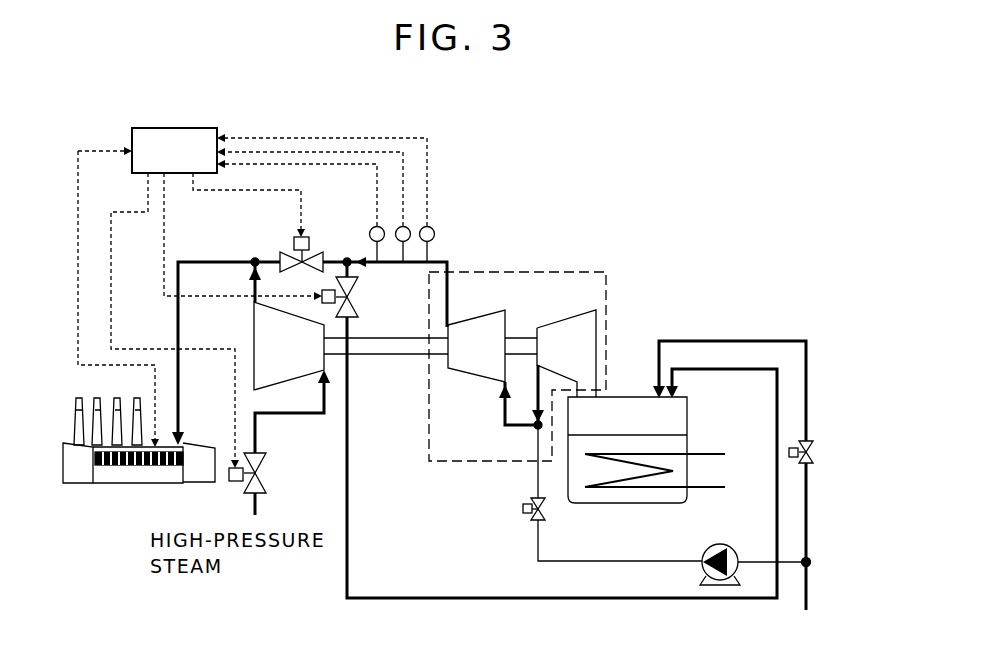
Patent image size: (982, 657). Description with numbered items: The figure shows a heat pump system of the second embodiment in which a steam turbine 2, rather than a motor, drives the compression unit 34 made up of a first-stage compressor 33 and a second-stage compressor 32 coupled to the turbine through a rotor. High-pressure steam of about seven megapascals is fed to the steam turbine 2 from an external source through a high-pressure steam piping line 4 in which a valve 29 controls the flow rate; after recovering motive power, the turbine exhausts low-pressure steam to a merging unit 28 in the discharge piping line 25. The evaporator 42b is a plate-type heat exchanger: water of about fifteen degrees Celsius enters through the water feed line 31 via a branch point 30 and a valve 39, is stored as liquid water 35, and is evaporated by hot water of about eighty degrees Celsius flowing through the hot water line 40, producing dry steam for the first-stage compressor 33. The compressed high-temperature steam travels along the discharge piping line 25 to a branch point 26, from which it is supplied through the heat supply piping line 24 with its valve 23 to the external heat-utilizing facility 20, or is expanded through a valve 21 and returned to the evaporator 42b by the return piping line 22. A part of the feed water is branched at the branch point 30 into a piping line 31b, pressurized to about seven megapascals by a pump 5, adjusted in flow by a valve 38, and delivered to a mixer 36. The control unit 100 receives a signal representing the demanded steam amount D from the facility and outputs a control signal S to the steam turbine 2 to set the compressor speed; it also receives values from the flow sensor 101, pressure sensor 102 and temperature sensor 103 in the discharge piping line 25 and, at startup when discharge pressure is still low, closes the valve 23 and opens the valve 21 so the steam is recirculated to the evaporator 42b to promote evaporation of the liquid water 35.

The steam turbine 2 is at (254, 322).
The high-pressure steam piping line 4 is at (294, 414).
The pump 5 is at (720, 545).
The external heat-utilizing facility 20 is at (108, 484).
The valve 21 is at (359, 298).
The return piping line 22 is at (447, 596).
The valve 23 is at (285, 252).
The heat supply piping line 24 is at (176, 326).
The discharge piping line 25 is at (447, 262).
The branch point 26 is at (344, 258).
The merging unit 28 is at (253, 258).
The valve 29 is at (266, 476).
The branch point 30 is at (811, 561).
The water feed line 31 is at (808, 592).
The piping line 31b is at (615, 561).
The second-stage compressor 32 is at (484, 316).
The first-stage compressor 33 is at (568, 318).
The compression unit 34 is at (546, 262).
The liquid water 35 is at (660, 502).
The mixer 36 is at (534, 430).
The valve 38 is at (523, 508).
The valve 39 is at (814, 450).
The hot water line 40 is at (716, 454).
The evaporator 42b is at (688, 418).
The control unit 100 is at (176, 128).
The flow sensor 101 is at (370, 228).
The pressure sensor 102 is at (412, 226).
The temperature sensor 103 is at (435, 227).
The steam amount D is at (78, 269).
The control signal S is at (111, 253).